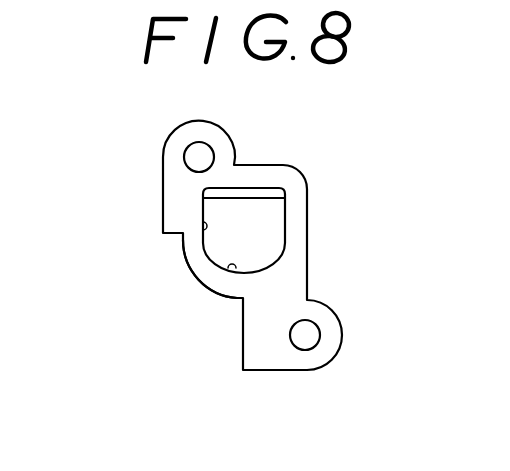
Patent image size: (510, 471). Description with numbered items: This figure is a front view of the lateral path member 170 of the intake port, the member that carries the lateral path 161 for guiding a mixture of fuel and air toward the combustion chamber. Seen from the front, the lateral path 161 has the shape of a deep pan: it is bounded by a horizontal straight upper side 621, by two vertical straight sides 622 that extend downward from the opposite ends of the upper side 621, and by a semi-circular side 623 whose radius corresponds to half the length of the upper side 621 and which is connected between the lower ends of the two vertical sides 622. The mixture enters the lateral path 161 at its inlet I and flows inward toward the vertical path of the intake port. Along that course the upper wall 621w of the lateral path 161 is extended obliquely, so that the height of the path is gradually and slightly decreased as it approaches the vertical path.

The lateral path member 170 is at (277, 153).
The horizontal straight upper side 621 is at (214, 256).
The upper wall 621w is at (252, 192).
The vertical straight sides 622 is at (287, 210).
The semi-circular side 623 is at (232, 266).
The lateral path 161 is at (255, 239).
The inlet I is at (262, 215).